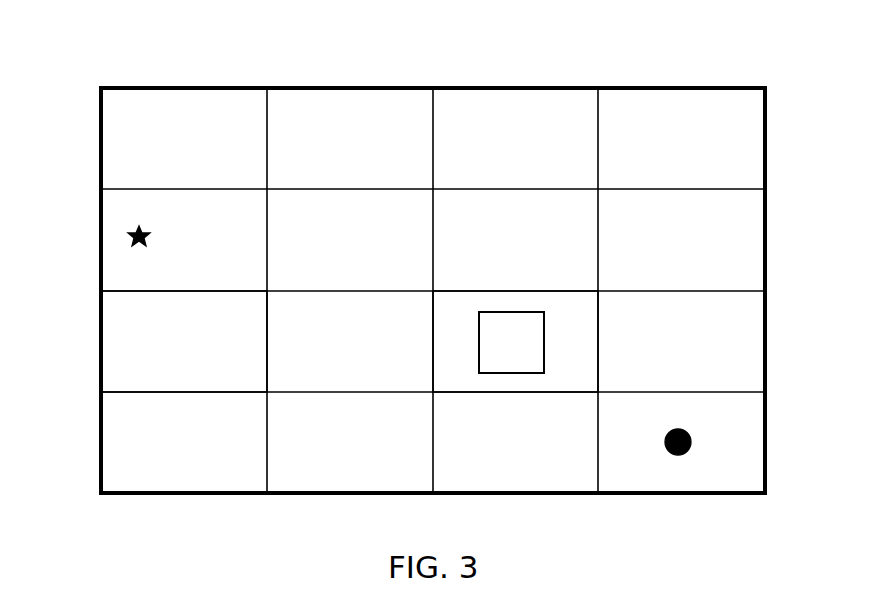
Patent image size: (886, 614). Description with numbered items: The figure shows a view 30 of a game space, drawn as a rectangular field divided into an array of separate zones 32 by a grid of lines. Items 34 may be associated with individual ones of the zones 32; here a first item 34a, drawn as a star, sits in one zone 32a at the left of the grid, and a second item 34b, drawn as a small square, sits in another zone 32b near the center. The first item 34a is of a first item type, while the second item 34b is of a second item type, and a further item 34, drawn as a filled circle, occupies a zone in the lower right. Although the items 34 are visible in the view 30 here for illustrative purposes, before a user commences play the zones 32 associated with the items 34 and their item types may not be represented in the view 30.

The view 30 is at (645, 79).
The zones 32 is at (354, 363).
The grid cell 32a is at (127, 339).
The grid cell 32b is at (566, 327).
The items 34 is at (690, 441).
The first item 34a is at (128, 235).
The second item 34b is at (543, 350).